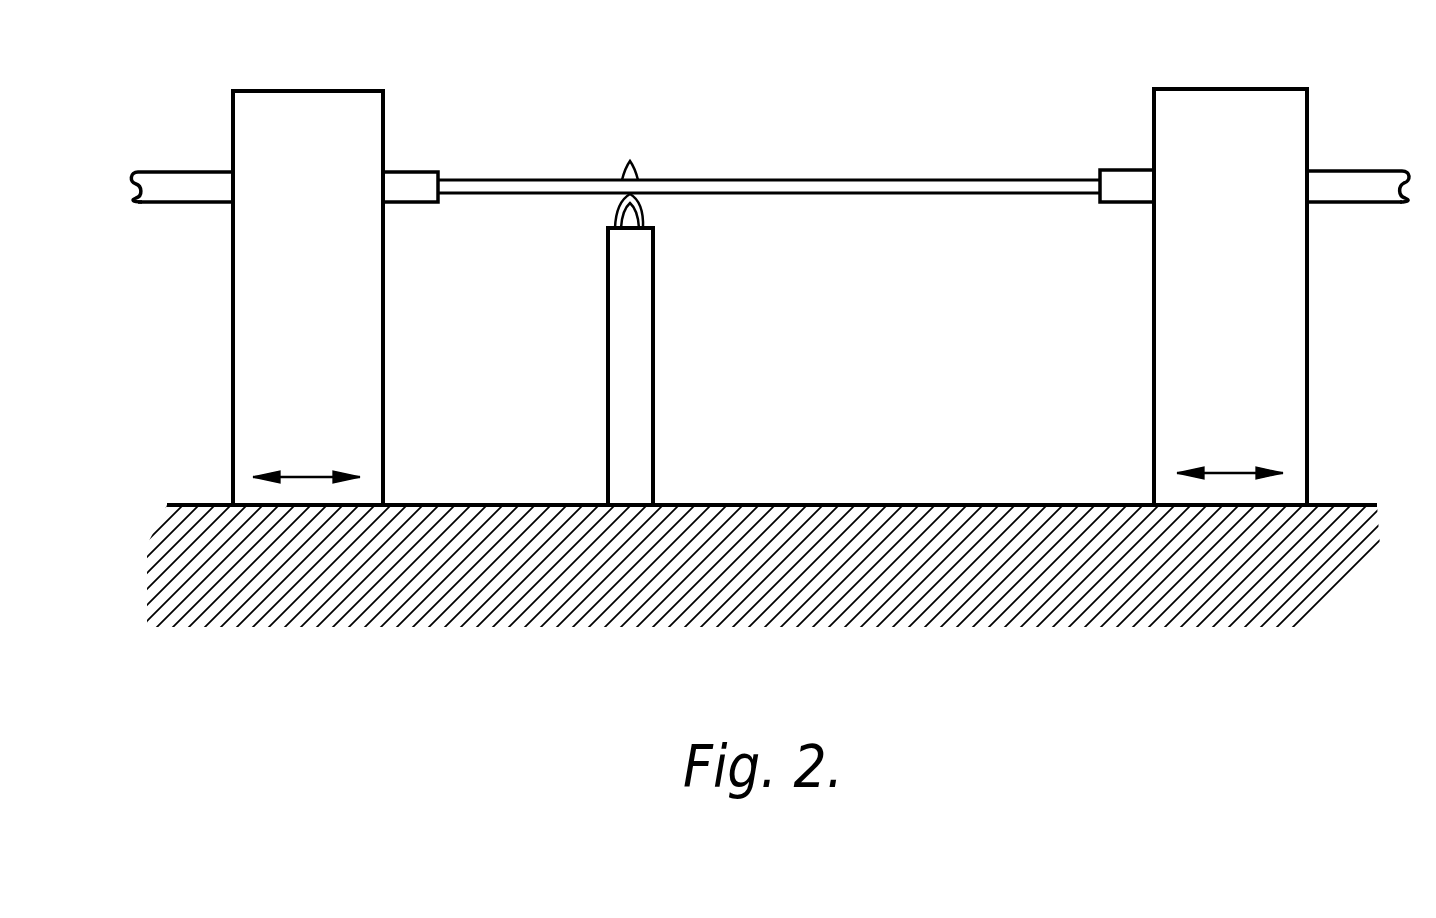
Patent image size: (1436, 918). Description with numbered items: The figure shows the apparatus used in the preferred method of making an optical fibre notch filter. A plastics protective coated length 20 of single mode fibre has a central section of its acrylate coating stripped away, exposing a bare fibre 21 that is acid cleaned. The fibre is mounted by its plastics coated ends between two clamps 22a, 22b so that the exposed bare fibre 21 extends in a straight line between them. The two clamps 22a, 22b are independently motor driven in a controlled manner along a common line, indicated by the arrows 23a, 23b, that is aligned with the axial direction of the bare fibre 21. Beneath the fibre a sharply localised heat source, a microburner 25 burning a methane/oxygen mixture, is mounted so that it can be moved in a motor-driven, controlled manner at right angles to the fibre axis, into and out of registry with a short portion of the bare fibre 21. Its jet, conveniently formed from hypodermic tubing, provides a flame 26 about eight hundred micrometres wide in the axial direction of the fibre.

The plastics protective coated length of single mode fibre 20 is at (183, 187).
The bare fibre 21 is at (733, 185).
The clamp 22a is at (302, 305).
The clamp 22b is at (1225, 325).
The arrow 23a is at (312, 477).
The arrow 23b is at (1228, 473).
The microburner 25 is at (633, 385).
The flame 26 is at (627, 215).